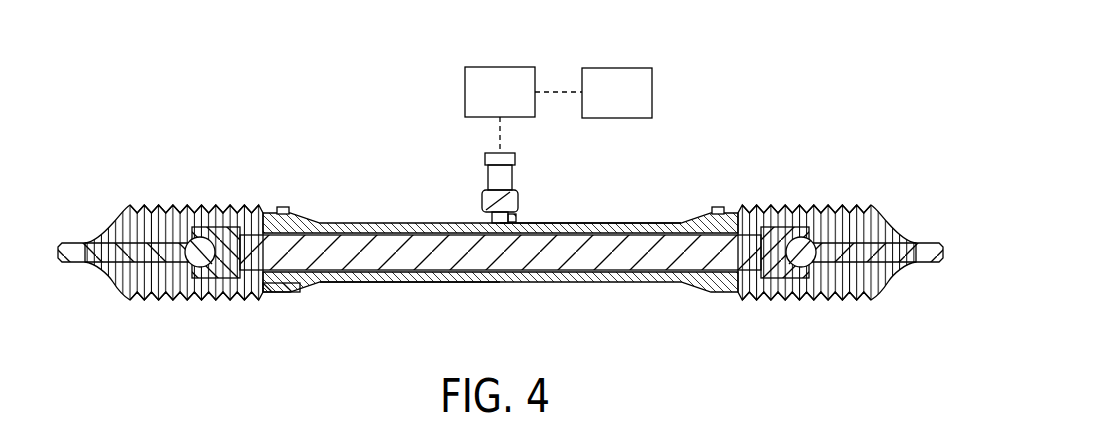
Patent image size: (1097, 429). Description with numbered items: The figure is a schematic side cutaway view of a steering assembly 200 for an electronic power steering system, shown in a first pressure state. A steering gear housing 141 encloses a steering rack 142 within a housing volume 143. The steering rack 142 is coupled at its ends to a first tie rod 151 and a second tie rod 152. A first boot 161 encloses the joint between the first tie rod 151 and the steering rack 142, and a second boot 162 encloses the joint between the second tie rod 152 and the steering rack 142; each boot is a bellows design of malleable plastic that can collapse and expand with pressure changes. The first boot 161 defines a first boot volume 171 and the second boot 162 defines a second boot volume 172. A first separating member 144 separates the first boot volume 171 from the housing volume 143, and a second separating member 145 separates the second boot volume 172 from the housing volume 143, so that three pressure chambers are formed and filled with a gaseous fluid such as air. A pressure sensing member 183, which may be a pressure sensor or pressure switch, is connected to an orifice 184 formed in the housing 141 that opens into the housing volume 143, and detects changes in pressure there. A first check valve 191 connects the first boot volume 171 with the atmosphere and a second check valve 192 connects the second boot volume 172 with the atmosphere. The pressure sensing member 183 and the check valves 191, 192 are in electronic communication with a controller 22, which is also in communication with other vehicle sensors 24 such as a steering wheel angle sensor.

The steering assembly 200 is at (200, 78).
The controller 22 is at (510, 105).
The vehicle sensors 24 is at (627, 106).
The steering gear housing 141 is at (650, 282).
The steering rack 142 is at (610, 268).
The housing volume 143 is at (356, 288).
The first separating member 144 is at (288, 285).
The second separating member 145 is at (660, 226).
The first tie rod 151 is at (72, 257).
The second tie rod 152 is at (934, 262).
The first boot 161 is at (122, 293).
The second boot 162 is at (883, 290).
The first boot volume 171 is at (159, 302).
The second boot volume 172 is at (840, 303).
The pressure sensing member 183 is at (490, 196).
The orifice 184 is at (514, 216).
The first check valve 191 is at (278, 210).
The second check valve 192 is at (716, 210).